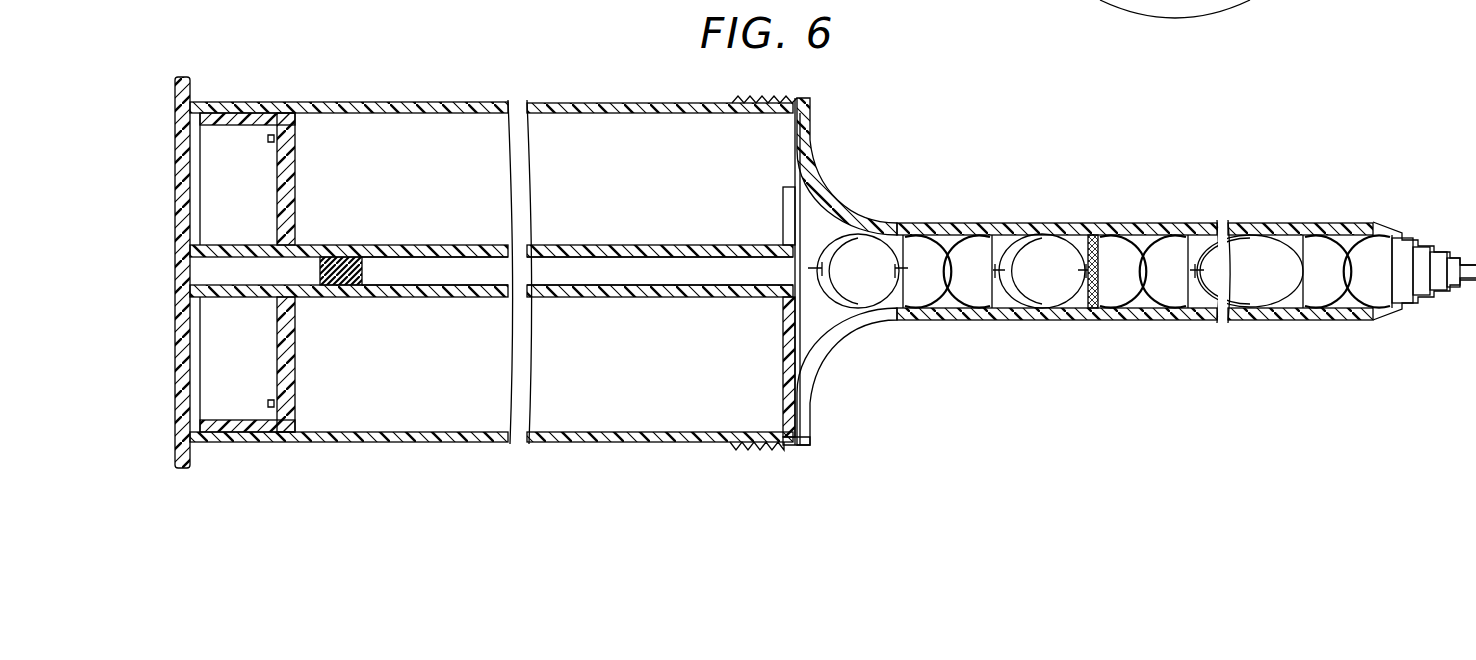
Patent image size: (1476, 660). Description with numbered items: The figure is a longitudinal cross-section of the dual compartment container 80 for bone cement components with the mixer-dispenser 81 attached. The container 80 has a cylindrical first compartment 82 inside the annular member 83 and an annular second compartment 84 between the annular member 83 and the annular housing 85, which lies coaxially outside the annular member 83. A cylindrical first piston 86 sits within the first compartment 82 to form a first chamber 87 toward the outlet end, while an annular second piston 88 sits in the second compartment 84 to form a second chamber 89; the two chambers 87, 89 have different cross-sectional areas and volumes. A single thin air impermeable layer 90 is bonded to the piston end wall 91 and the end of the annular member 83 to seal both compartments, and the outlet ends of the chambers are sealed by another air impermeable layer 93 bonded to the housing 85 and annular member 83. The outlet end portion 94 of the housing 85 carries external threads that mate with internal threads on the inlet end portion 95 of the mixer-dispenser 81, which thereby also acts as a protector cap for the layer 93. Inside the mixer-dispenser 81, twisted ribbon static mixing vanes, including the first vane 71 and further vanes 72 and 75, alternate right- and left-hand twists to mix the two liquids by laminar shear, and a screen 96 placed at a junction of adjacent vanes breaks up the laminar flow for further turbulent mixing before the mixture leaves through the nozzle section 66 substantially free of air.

The nozzle section 66 is at (1392, 230).
The first static mixing vane 71 is at (958, 256).
The static mixing vane 72 is at (1213, 292).
The static mixing vane 75 is at (1347, 252).
The dual compartment container 80 is at (490, 68).
The mixer-dispenser 81 is at (1220, 212).
The first compartment 82 is at (470, 292).
The annular member 83 is at (605, 299).
The second compartment 84 is at (362, 110).
The annular housing 85 is at (584, 102).
The first piston 86 is at (364, 270).
The first chamber 87 is at (600, 266).
The second piston 88 is at (277, 165).
The second chamber 89 is at (420, 194).
The air impermeable layer 90 is at (180, 365).
The piston end wall 91 is at (180, 76).
The air impermeable layer 93 is at (792, 170).
The outlet end portion 94 is at (752, 440).
The inlet end portion 95 is at (812, 122).
The screen 96 is at (1100, 244).